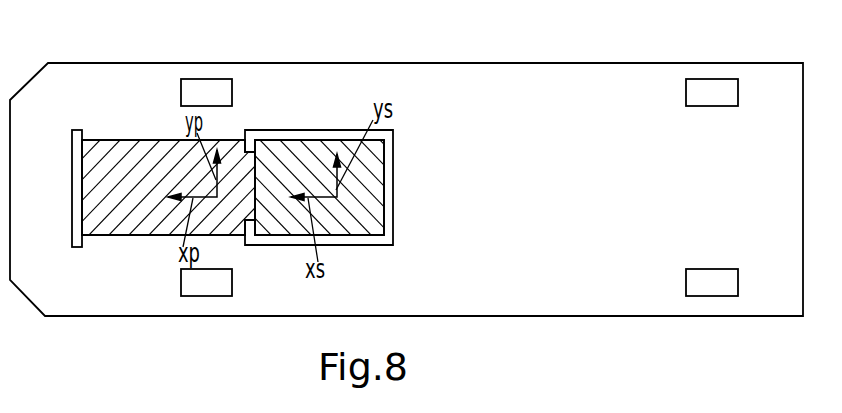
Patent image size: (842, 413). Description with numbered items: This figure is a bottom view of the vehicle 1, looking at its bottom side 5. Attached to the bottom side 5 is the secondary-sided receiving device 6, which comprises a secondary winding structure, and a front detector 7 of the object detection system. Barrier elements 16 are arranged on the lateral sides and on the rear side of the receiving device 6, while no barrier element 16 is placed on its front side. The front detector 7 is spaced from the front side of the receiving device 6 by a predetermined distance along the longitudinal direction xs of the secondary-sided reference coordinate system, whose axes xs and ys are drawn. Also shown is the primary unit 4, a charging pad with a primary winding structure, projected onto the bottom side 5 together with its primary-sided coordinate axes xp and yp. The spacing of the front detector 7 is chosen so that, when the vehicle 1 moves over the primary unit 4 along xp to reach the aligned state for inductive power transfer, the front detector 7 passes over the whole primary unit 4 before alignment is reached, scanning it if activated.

The vehicle 1 is at (406, 165).
The primary unit 4 is at (165, 150).
The bottom side 5 is at (282, 80).
The receiving device 6 is at (358, 163).
The front detector 7 is at (73, 150).
The barrier element 16 is at (312, 135).